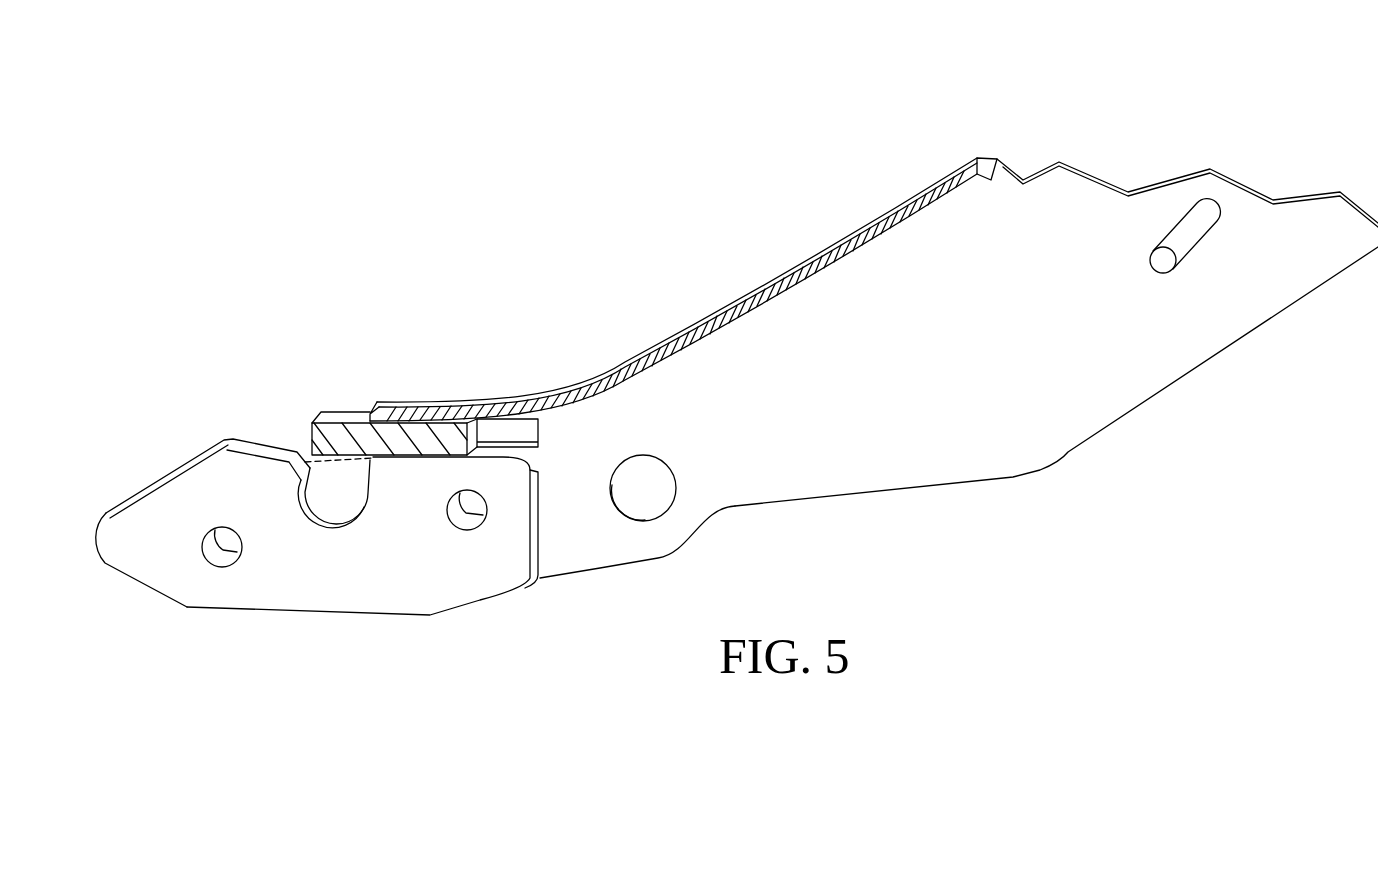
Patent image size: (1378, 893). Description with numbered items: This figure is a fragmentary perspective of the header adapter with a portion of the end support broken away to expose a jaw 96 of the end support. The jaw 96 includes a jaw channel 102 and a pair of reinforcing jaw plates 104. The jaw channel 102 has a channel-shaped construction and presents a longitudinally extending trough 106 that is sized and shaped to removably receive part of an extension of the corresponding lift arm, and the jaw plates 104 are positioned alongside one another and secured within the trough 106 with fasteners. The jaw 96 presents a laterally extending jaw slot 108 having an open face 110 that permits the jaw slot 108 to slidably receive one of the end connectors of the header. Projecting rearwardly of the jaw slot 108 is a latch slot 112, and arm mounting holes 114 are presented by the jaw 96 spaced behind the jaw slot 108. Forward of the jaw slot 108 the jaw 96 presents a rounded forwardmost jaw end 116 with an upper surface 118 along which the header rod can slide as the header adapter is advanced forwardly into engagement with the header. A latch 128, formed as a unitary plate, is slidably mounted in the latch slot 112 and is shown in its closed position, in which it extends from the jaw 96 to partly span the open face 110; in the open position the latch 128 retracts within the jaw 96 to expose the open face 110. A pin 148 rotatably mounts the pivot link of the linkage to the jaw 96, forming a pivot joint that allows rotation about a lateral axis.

The jaw 96 is at (489, 153).
The jaw channel 102 is at (920, 455).
The reinforcing jaw plates 104 is at (478, 592).
The trough 106 is at (797, 478).
The jaw slot 108 is at (322, 512).
The open face 110 is at (346, 413).
The latch slot 112 is at (527, 440).
The arm mounting holes 114 is at (657, 520).
The jaw end 116 is at (97, 515).
The upper surface 118 is at (170, 477).
The latch 128 is at (433, 437).
The pin 148 is at (1173, 262).